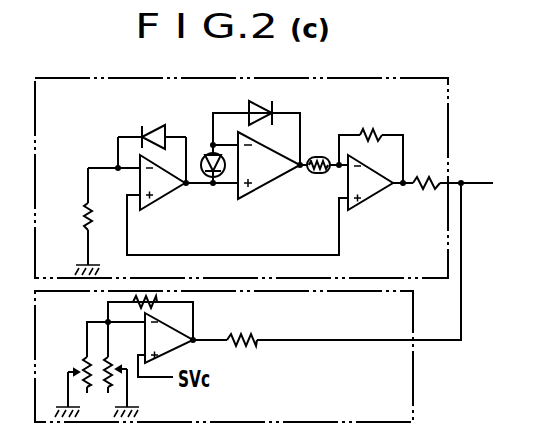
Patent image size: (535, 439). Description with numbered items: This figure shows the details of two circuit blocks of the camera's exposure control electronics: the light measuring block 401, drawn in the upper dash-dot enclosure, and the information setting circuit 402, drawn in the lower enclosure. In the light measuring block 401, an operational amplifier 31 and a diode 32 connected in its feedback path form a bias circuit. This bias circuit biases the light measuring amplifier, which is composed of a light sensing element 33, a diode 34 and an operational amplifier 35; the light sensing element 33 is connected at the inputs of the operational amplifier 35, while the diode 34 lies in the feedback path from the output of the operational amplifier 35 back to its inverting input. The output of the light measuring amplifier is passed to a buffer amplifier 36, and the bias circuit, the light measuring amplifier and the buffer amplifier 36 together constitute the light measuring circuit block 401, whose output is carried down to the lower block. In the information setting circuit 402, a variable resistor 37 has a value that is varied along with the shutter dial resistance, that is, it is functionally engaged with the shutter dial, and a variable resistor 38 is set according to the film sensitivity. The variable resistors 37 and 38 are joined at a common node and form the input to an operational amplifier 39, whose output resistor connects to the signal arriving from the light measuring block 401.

The operational amplifier 31 is at (167, 191).
The diode 32 is at (163, 131).
The light sensing element 33 is at (219, 186).
The diode 34 is at (250, 106).
The operational amplifier 35 is at (267, 172).
The buffer amplifier 36 is at (370, 190).
The variable resistor 37 is at (135, 383).
The variable resistor 38 is at (82, 365).
The operational amplifier 39 is at (168, 334).
The light measuring block 401 is at (330, 77).
The information setting circuit 402 is at (396, 385).